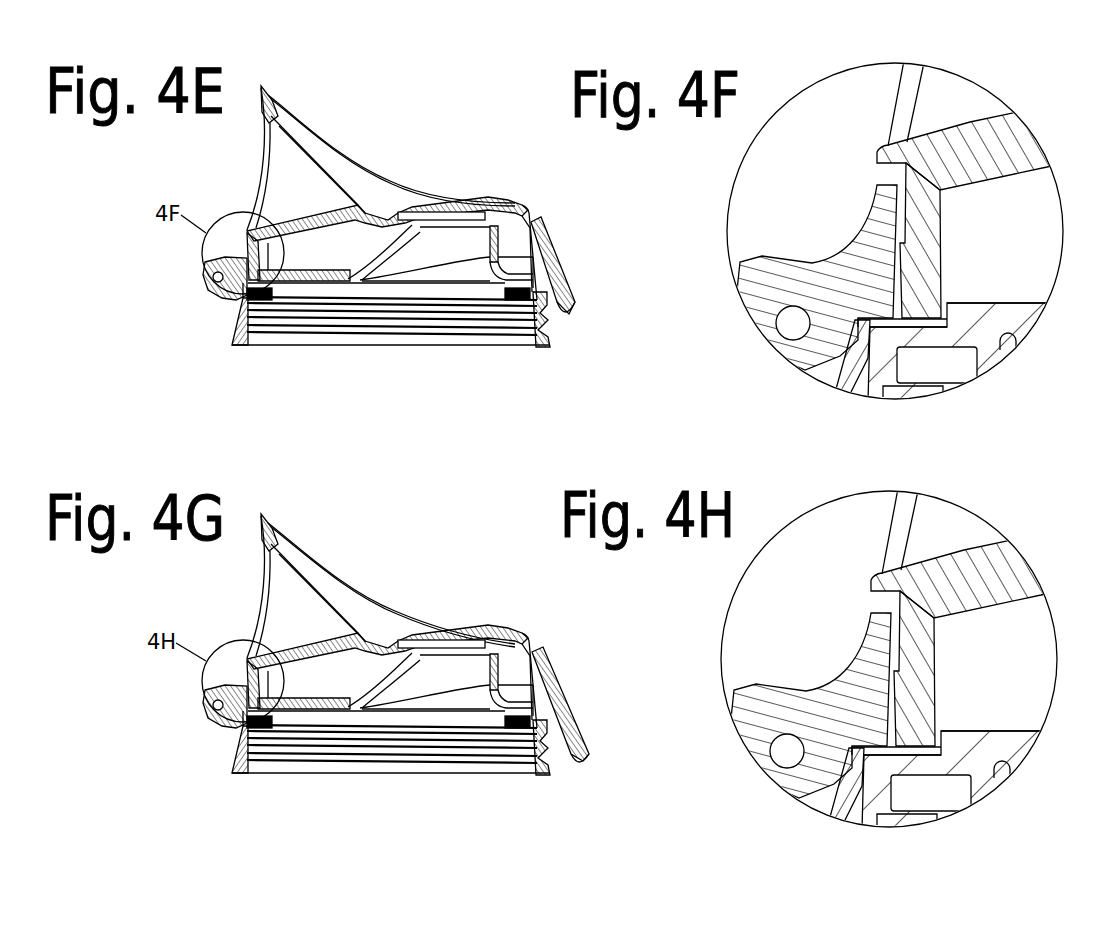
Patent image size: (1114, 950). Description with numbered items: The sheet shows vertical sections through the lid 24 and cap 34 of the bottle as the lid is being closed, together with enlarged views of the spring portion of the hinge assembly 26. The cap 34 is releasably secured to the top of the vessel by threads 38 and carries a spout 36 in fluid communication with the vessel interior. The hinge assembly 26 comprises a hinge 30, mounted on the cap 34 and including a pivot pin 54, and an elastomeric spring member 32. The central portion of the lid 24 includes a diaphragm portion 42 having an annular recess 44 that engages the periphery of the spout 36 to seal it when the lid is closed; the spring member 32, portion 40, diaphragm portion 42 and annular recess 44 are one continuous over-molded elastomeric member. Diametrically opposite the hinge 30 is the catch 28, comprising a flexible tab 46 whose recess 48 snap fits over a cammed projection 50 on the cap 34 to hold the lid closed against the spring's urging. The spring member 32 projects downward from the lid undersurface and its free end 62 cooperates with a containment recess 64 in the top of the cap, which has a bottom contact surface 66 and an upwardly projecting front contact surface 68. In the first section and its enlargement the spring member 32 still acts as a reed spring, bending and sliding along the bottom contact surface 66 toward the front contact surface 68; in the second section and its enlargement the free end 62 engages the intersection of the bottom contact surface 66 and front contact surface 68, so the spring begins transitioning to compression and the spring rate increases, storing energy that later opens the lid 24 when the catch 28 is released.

In FIG. 4E, the lid 24 is at (382, 174).
In FIG. 4G, the lid 24 is at (391, 585).
In FIG. 4E, the hinge assembly 26 is at (191, 221).
In FIG. 4G, the hinge assembly 26 is at (191, 649).
In FIG. 4E, the catch 28 is at (539, 206).
In FIG. 4G, the catch 28 is at (545, 657).
In FIG. 4E, the hinge 30 is at (214, 296).
In FIG. 4G, the hinge 30 is at (213, 734).
In FIG. 4F, the hinge 30 is at (760, 288).
In FIG. 4H, the hinge 30 is at (776, 705).
In FIG. 4E, the spring member 32 is at (260, 257).
In FIG. 4G, the spring member 32 is at (297, 682).
In FIG. 4F, the spring member 32 is at (923, 283).
In FIG. 4H, the spring member 32 is at (964, 668).
In FIG. 4E, the cap 34 is at (283, 333).
In FIG. 4G, the cap 34 is at (391, 765).
In FIG. 4F, the cap 34 is at (863, 357).
In FIG. 4H, the cap 34 is at (830, 805).
In FIG. 4E, the spout 36 is at (423, 228).
In FIG. 4G, the spout 36 is at (378, 740).
In FIG. 4E, the threads 38 is at (353, 323).
In FIG. 4G, the threads 38 is at (392, 773).
In FIG. 4E, the portion 40 is at (317, 162).
In FIG. 4G, the portion 40 is at (315, 578).
In FIG. 4E, the diaphragm portion 42 is at (452, 203).
In FIG. 4G, the diaphragm portion 42 is at (387, 615).
In FIG. 4F, the diaphragm portion 42 is at (976, 145).
In FIG. 4H, the diaphragm portion 42 is at (970, 573).
In FIG. 4E, the annular recess 44 is at (493, 210).
In FIG. 4G, the annular recess 44 is at (511, 640).
In FIG. 4E, the tab 46 is at (568, 288).
In FIG. 4G, the tab 46 is at (567, 697).
In FIG. 4E, the recess 48 is at (533, 293).
In FIG. 4G, the recess 48 is at (525, 771).
In FIG. 4E, the cammed projection 50 is at (569, 313).
In FIG. 4G, the cammed projection 50 is at (558, 780).
In FIG. 4E, the pivot pin 54 is at (220, 272).
In FIG. 4G, the pivot pin 54 is at (220, 658).
In FIG. 4F, the pivot pin 54 is at (793, 323).
In FIG. 4H, the pivot pin 54 is at (753, 775).
In FIG. 4F, the free end 62 is at (950, 322).
In FIG. 4H, the free end 62 is at (955, 790).
In FIG. 4F, the recess 64 is at (897, 316).
In FIG. 4H, the recess 64 is at (836, 695).
In FIG. 4F, the bottom contact surface 66 is at (897, 335).
In FIG. 4H, the bottom contact surface 66 is at (926, 814).
In FIG. 4F, the front contact surface 68 is at (953, 313).
In FIG. 4H, the front contact surface 68 is at (1001, 773).